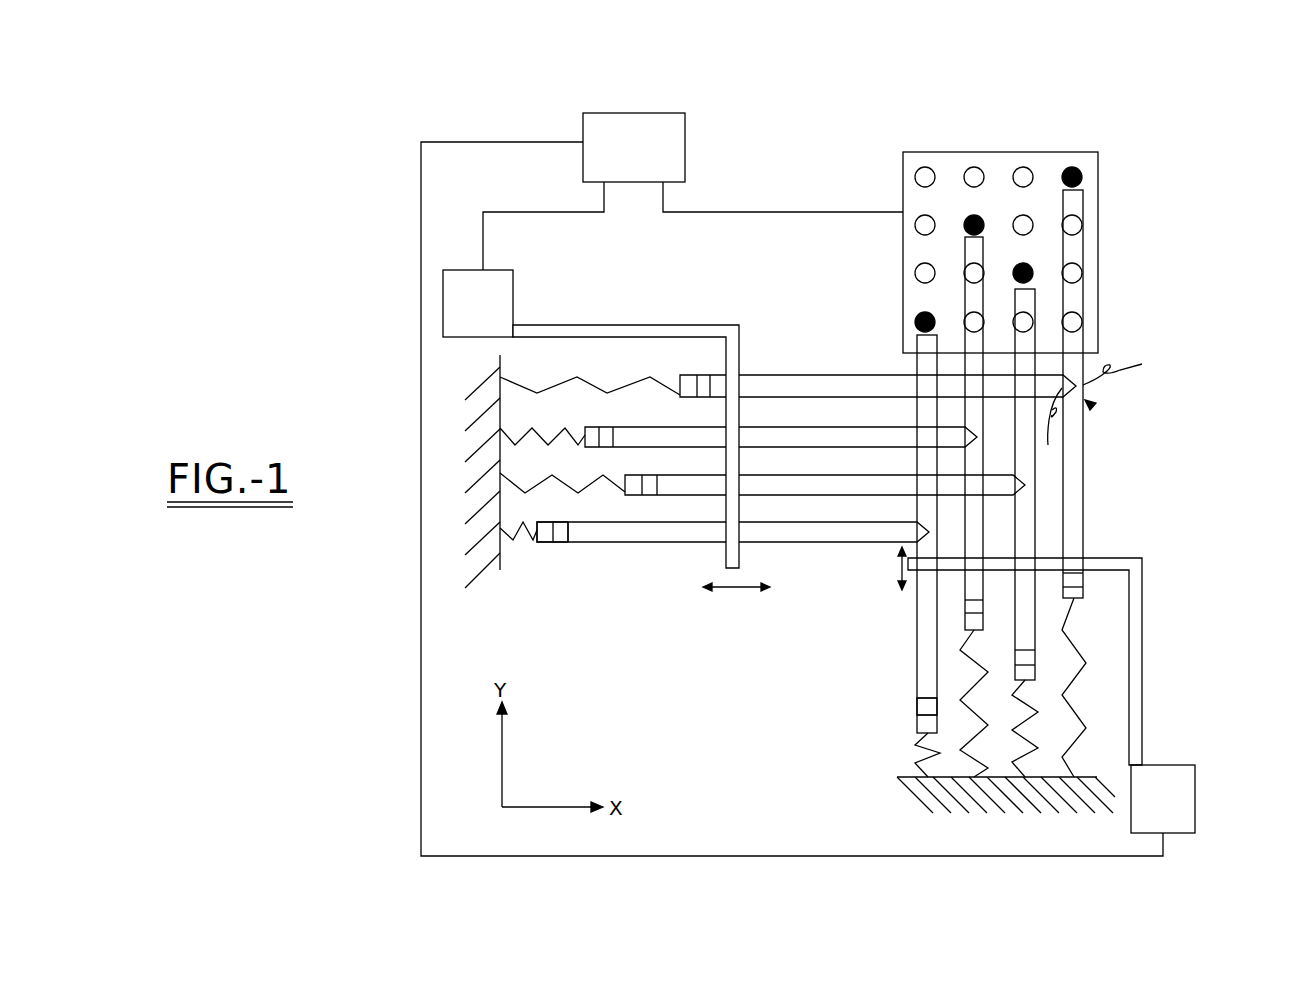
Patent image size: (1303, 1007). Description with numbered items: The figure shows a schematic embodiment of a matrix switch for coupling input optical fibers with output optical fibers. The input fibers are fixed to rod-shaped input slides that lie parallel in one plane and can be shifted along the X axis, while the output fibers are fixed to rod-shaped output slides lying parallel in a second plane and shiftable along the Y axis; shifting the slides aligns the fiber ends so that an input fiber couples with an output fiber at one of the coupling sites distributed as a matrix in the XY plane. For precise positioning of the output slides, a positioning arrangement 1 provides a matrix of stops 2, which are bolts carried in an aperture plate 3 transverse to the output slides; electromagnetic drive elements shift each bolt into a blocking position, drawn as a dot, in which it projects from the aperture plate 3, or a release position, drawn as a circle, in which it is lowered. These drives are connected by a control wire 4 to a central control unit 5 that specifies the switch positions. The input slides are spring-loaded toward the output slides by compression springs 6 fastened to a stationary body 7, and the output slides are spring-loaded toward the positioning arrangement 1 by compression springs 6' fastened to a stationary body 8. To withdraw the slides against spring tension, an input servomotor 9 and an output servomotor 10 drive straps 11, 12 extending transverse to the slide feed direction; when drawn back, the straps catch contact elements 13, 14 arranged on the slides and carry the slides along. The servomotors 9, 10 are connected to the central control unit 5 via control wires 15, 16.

The positioning arrangement 1 is at (1043, 214).
The stops 2 is at (1022, 168).
The aperture plate 3 is at (922, 150).
The control wire 4 is at (800, 212).
The central control unit 5 is at (685, 128).
The compression springs 6 is at (590, 443).
The compression springs 6' is at (1012, 687).
The stationary body 7 is at (470, 577).
The stationary body 8 is at (917, 797).
The input servomotor 9 is at (513, 287).
The output servomotor 10 is at (1195, 782).
The strap 11 is at (645, 325).
The strap 12 is at (1137, 652).
The contact elements 13 is at (567, 545).
The contact elements 14 is at (917, 708).
The control wire 15 is at (510, 212).
The control wire 16 is at (510, 142).